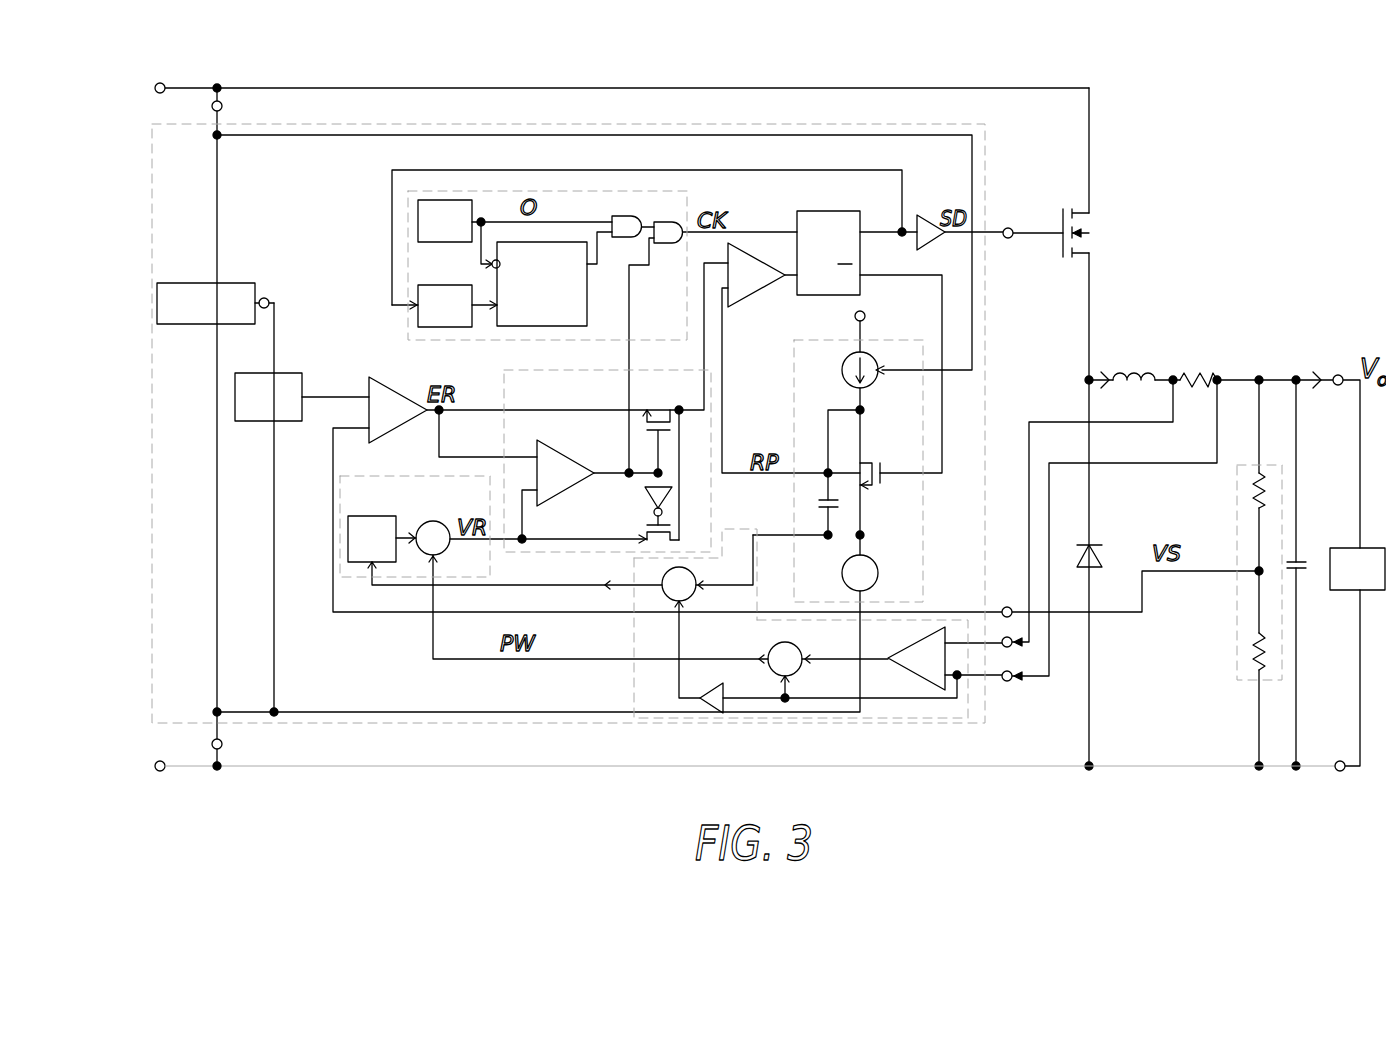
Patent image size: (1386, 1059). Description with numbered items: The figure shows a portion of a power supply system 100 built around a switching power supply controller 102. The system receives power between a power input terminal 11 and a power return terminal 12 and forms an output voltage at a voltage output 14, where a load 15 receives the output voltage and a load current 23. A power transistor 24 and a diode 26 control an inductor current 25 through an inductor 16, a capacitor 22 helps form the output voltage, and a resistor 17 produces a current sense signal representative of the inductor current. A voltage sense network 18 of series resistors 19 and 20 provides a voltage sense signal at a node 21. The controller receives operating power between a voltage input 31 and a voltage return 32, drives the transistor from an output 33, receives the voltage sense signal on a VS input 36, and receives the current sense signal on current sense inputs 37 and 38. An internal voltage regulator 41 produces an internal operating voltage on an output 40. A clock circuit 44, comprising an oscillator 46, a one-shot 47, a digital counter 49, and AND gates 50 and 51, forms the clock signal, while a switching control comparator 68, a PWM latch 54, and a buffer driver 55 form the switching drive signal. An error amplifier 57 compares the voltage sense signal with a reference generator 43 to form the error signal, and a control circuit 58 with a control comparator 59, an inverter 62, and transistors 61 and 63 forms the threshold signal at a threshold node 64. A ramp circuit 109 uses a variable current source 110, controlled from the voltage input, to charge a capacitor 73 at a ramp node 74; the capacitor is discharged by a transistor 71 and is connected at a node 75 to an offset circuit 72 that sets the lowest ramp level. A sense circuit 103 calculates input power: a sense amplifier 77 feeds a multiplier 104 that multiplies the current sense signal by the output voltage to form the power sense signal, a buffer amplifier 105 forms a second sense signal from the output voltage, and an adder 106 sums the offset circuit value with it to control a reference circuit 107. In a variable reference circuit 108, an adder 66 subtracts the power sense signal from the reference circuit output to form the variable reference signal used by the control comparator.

The power input terminal 11 is at (160, 83).
The power return terminal 12 is at (160, 771).
The voltage output 14 is at (1340, 375).
The load 15 is at (1343, 591).
The inductor 16 is at (1137, 373).
The resistor 17 is at (1197, 374).
The voltage sense network 18 is at (1240, 682).
The resistor 19 is at (1255, 500).
The resistor 20 is at (1255, 648).
The node 21 is at (1255, 576).
The capacitor 22 is at (1305, 560).
The load current 23 is at (1320, 371).
The power transistor 24 is at (1092, 240).
The inductor current 25 is at (1112, 372).
The diode 26 is at (1100, 560).
The voltage input 31 is at (222, 106).
The voltage return 32 is at (222, 744).
The output 33 is at (1008, 228).
The VS input 36 is at (1005, 607).
The current sense input 37 is at (1012, 645).
The current sense input 38 is at (1008, 681).
The output 40 is at (268, 298).
The internal voltage regulator 41 is at (205, 325).
The reference generator 43 is at (258, 422).
The clock circuit 44 is at (407, 333).
The oscillator 46 is at (433, 243).
The one-shot 47 is at (453, 284).
The digital counter 49 is at (587, 290).
The AND gate 50 is at (630, 240).
The AND gate 51 is at (672, 244).
The PWM latch 54 is at (820, 211).
The buffer driver 55 is at (931, 218).
The error amplifier 57 is at (373, 381).
The control circuit 58 is at (504, 385).
The control comparator 59 is at (546, 440).
The transistor 61 is at (668, 410).
The inverter 62 is at (645, 497).
The transistor 63 is at (673, 538).
The threshold node 64 is at (681, 416).
The adder 66 is at (440, 522).
The switching control comparator 68 is at (756, 291).
The transistor 71 is at (868, 460).
The offset circuit 72 is at (878, 572).
The capacitor 73 is at (818, 504).
The ramp node 74 is at (827, 469).
The node 75 is at (866, 533).
The sense amplifier 77 is at (916, 640).
The power supply system 100 is at (877, 803).
The switching power supply controller 102 is at (885, 722).
The sense circuit 103 is at (633, 692).
The multiplier 104 is at (797, 672).
The buffer amplifier 105 is at (710, 708).
The adder 106 is at (690, 598).
The reference circuit 107 is at (348, 540).
The variable reference circuit 108 is at (350, 476).
The ramp circuit 109 is at (793, 392).
The variable current source 110 is at (874, 383).